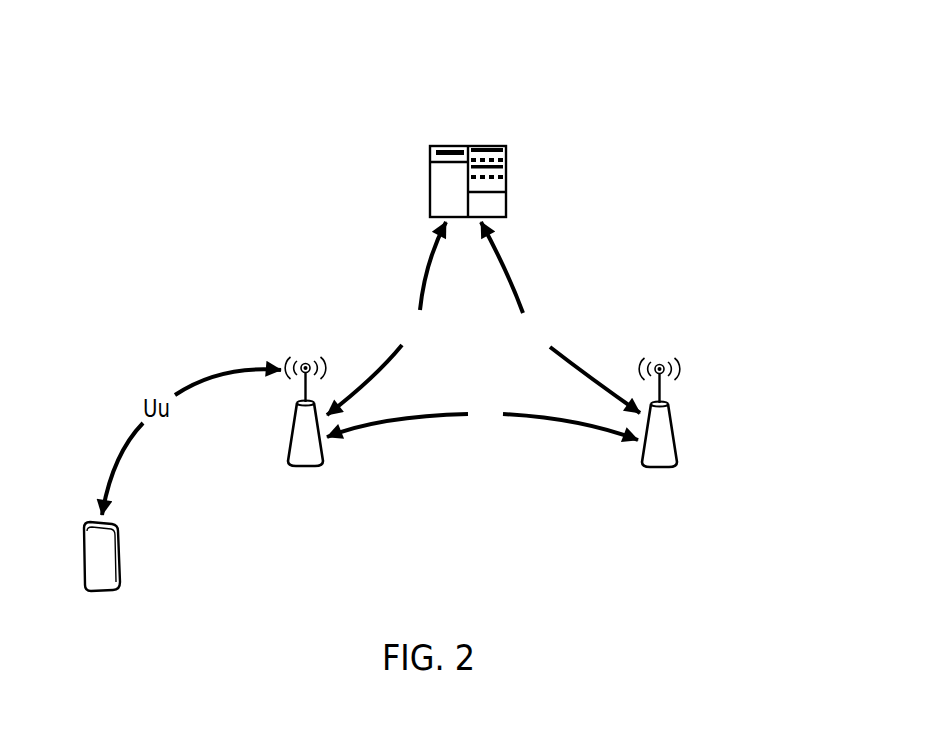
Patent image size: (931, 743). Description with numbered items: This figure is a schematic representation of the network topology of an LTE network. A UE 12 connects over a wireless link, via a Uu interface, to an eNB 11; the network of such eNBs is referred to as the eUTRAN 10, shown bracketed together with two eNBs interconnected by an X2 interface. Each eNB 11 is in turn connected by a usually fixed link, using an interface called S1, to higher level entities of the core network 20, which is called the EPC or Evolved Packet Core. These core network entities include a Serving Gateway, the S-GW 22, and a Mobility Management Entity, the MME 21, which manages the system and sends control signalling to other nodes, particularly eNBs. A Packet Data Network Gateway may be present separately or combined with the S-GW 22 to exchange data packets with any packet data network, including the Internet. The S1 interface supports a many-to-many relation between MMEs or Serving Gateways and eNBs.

The eUTRAN 10 is at (723, 220).
The eNB 11 is at (307, 500).
The UE 12 is at (127, 613).
The core network 20 is at (623, 60).
The MME 21 is at (500, 98).
The S-GW 22 is at (422, 98).